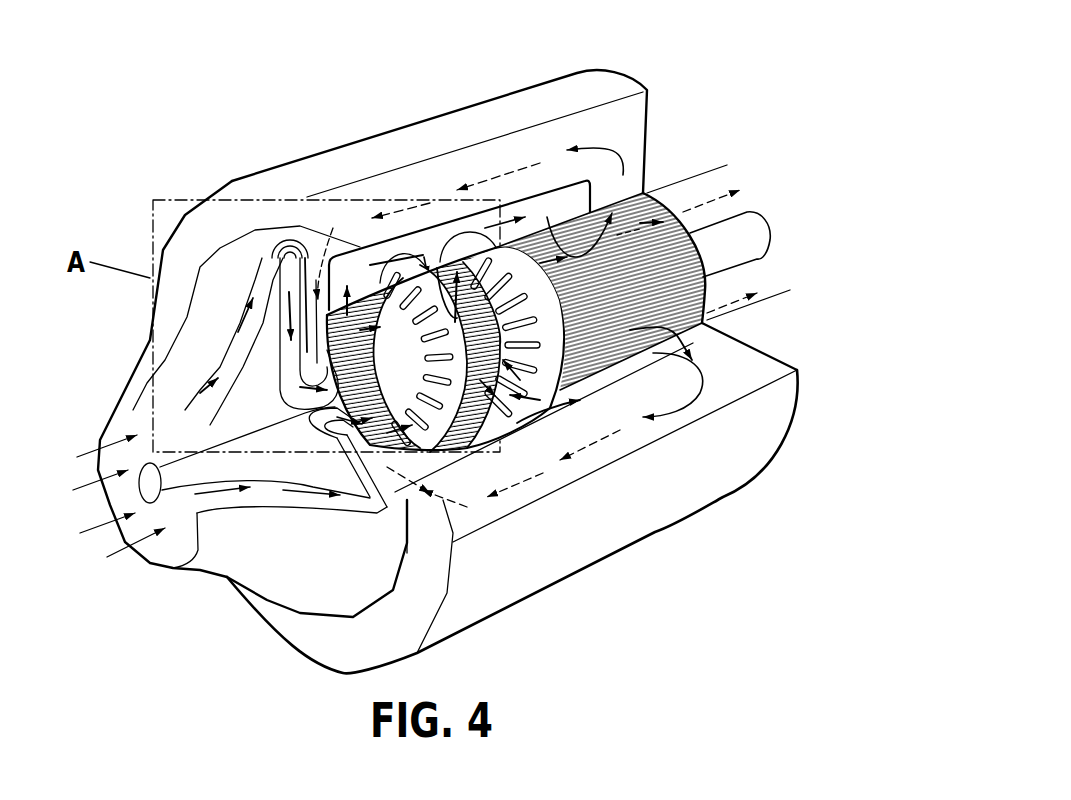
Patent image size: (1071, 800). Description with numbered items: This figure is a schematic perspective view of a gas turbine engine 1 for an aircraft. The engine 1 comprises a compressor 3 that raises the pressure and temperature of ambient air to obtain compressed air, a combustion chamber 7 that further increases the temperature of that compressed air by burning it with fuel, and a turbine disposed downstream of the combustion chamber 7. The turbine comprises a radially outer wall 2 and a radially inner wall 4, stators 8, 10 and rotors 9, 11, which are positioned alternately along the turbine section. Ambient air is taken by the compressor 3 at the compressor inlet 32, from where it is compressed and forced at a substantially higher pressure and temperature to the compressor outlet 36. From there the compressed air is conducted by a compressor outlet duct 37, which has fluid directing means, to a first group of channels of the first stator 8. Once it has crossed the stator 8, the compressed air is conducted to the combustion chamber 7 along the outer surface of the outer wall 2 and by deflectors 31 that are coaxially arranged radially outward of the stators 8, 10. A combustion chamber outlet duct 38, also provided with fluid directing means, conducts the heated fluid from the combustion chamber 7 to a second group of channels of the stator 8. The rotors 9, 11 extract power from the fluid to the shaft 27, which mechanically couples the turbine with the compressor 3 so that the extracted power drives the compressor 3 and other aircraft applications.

The gas turbine engine 1 is at (695, 120).
The outer wall 2 is at (370, 287).
The compressor 3 is at (262, 492).
The inner wall 4 is at (605, 450).
The combustion chamber 7 is at (540, 142).
The stator 8 is at (434, 445).
The rotor 9 is at (494, 447).
The stator 10 is at (660, 450).
The rotor 11 is at (737, 477).
The shaft 27 is at (730, 247).
The deflector 31 is at (383, 253).
The compressor inlet 32 is at (167, 547).
The compressor outlet 36 is at (318, 268).
The compressor outlet duct 37 is at (283, 303).
The combustion chamber outlet duct 38 is at (305, 262).